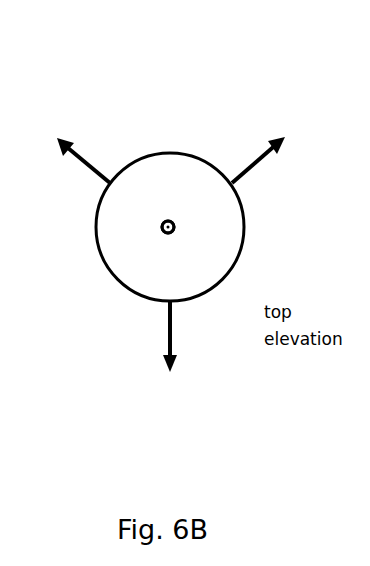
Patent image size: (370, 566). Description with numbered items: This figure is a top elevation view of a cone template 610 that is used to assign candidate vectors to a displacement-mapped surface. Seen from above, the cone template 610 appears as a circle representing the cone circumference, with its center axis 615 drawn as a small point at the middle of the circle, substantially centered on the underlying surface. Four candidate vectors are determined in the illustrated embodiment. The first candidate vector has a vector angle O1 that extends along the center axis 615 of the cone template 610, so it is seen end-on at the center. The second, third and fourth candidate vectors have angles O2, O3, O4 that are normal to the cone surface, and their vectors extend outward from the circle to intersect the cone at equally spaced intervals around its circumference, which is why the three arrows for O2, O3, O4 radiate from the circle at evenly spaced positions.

The cone template 610 is at (192, 139).
The center axis 615 is at (152, 234).
The vector angle of the first candidate vector O1 is at (169, 242).
The vector angle of the second candidate vector O2 is at (266, 160).
The vector angle of the third candidate vector O3 is at (80, 160).
The vector angle of the fourth candidate vector O4 is at (182, 342).